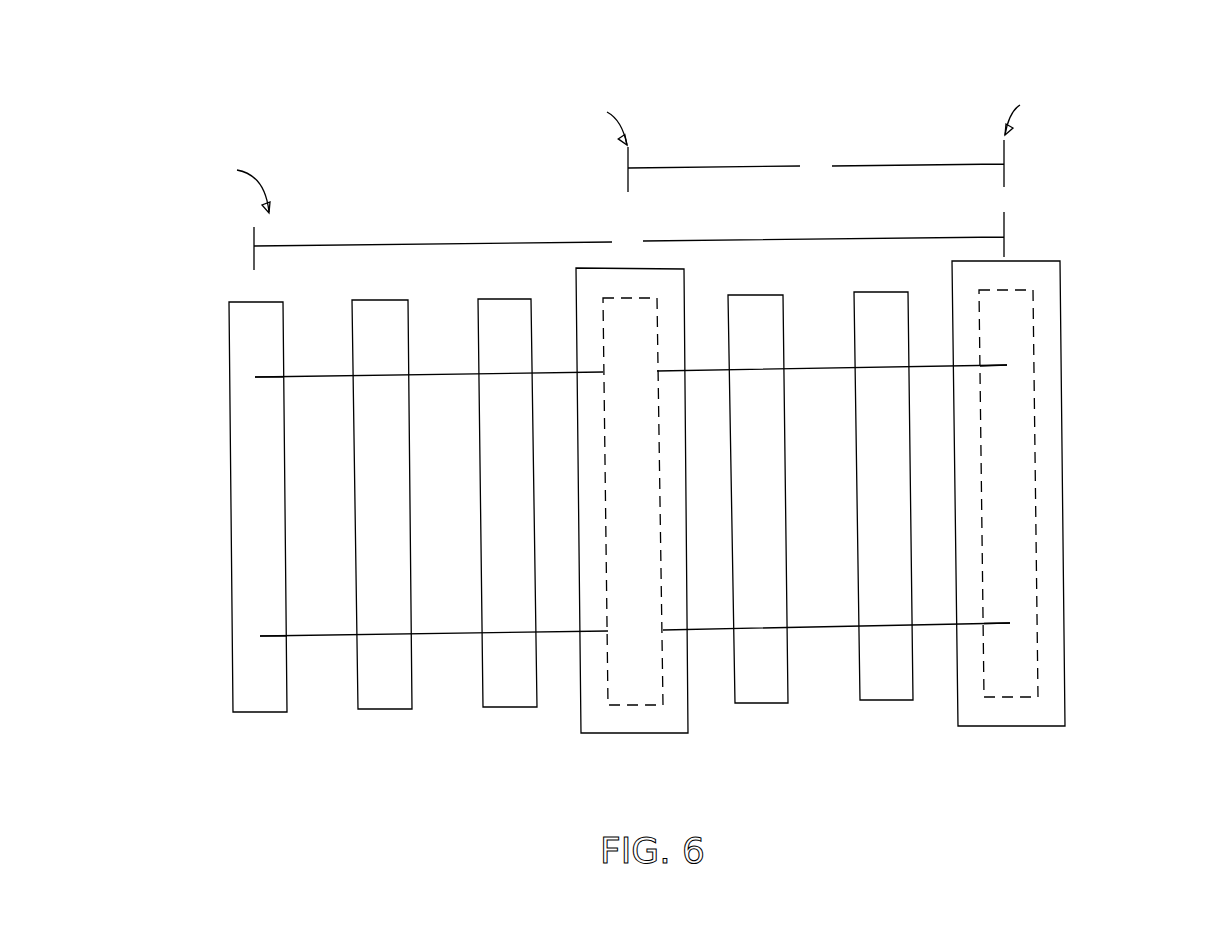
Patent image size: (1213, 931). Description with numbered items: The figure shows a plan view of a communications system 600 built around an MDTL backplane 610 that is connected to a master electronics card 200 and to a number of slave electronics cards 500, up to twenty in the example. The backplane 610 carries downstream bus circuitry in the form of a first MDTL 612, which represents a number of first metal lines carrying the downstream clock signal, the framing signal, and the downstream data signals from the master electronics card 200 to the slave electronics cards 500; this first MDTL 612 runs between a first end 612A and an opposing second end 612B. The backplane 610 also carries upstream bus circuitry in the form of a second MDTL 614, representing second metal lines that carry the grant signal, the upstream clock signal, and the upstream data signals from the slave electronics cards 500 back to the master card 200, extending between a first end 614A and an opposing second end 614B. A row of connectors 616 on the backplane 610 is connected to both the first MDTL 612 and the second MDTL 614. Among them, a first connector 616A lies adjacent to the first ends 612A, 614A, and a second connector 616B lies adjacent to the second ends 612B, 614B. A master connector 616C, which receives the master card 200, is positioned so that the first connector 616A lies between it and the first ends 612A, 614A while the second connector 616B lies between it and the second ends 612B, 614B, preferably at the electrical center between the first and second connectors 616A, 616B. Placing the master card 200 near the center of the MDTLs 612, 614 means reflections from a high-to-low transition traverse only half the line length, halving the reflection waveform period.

The communications system 600 is at (1087, 90).
The MDTL backplane 610 is at (1082, 232).
The first MDTL 612 is at (315, 378).
The first end 612A is at (263, 368).
The second end 612B is at (1000, 358).
The second MDTL 614 is at (320, 640).
The first end 614A is at (265, 628).
The second end 614B is at (1008, 615).
The connectors 616 is at (231, 680).
The first connector 616A is at (229, 483).
The second connector 616B is at (1035, 475).
The master connector 616C is at (620, 705).
The master electronics card 200 is at (665, 733).
The slave electronics cards 500 is at (1018, 727).